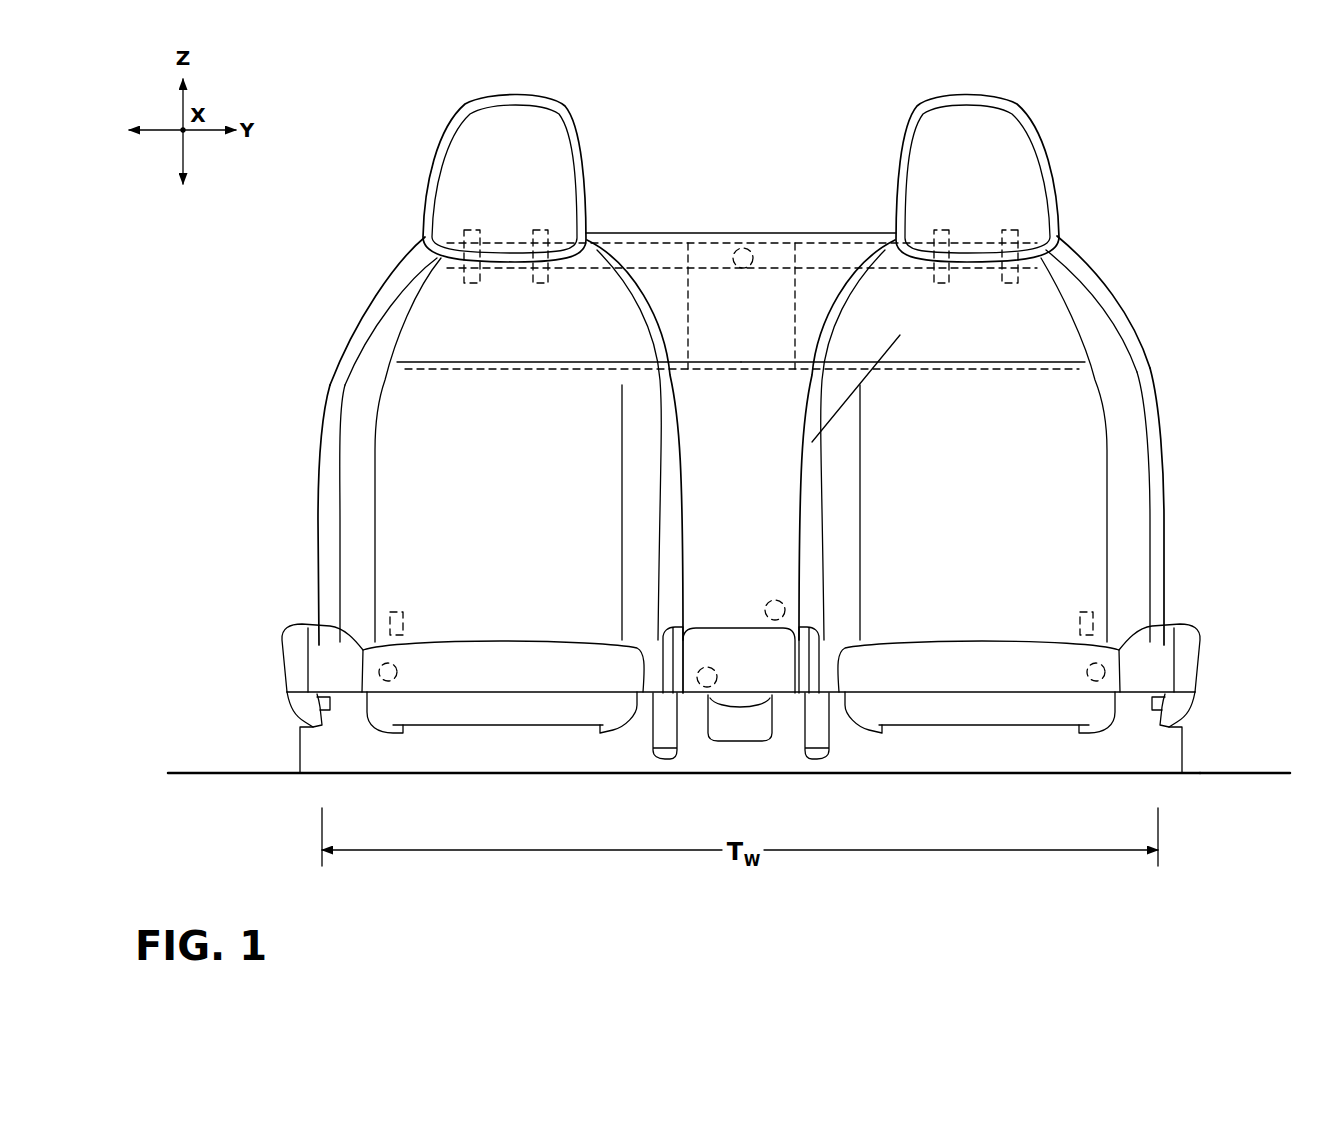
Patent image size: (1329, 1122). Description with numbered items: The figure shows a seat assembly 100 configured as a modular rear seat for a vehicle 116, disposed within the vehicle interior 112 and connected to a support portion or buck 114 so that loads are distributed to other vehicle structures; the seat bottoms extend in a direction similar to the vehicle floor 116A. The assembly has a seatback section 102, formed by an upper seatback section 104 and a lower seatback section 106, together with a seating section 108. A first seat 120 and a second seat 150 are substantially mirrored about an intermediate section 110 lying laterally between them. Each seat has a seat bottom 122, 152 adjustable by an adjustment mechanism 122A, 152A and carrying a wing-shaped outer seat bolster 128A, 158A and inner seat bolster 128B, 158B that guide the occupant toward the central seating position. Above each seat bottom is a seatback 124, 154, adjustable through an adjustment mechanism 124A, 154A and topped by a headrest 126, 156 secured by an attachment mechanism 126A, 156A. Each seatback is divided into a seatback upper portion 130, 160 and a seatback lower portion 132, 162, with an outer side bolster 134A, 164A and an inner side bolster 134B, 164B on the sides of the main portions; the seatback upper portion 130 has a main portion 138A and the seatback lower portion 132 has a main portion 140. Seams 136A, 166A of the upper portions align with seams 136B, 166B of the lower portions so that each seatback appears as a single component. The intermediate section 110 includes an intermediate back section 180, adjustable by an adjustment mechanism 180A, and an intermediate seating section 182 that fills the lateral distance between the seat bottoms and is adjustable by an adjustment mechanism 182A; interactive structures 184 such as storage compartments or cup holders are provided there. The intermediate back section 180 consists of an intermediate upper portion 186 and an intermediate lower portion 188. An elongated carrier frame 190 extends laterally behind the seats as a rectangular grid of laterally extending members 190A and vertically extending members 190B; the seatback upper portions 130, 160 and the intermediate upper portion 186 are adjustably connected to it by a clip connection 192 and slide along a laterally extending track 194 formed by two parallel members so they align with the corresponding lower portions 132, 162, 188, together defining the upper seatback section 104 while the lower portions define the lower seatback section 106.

The seat assembly 100 is at (1090, 112).
The seatback section 102 is at (1095, 257).
The upper seatback section 104 is at (1142, 322).
The lower seatback section 106 is at (1168, 522).
The seating section 108 is at (1212, 632).
The intermediate section 110 is at (642, 220).
The vehicle interior 112 is at (1238, 690).
The support portion or buck 114 is at (1108, 733).
The vehicle 116 is at (1223, 846).
The vehicle floor 116A is at (1218, 776).
The first seat 120 is at (400, 242).
The seat bottom 122 is at (278, 652).
The adjustment mechanism 122A is at (380, 678).
The seatback 124 is at (328, 349).
The adjustment mechanism 124A is at (388, 620).
The headrest 126 is at (472, 98).
The attachment mechanism 126A is at (462, 240).
The outer seat bolster 128A is at (293, 672).
The inner seat bolster 128B is at (658, 670).
The seatback upper portion 130 is at (448, 298).
The seatback lower portion 132 is at (405, 530).
The outer side bolster 134A is at (315, 477).
The inner side bolster 134B is at (640, 410).
The seams 136A is at (457, 327).
The seams 136B is at (410, 370).
The first bolster shoulder portion 138A is at (430, 282).
The main portion 140 is at (390, 582).
The second seat 150 is at (1068, 203).
The seat bottom 152 is at (1207, 690).
The adjustment mechanism 152A is at (1100, 682).
The seatback 154 is at (1168, 433).
The adjustment mechanism 154A is at (1093, 630).
The headrest 156 is at (990, 96).
The attachment mechanism 156A is at (1090, 258).
The outer seat bolster 158A is at (1187, 663).
The inner seat bolster 158B is at (823, 660).
The seatback upper portion 160 is at (1013, 337).
The seatback lower portion 162 is at (1047, 493).
The outer side bolster 164A is at (1112, 265).
The inner side bolster 164B is at (875, 293).
The seams 166A is at (1140, 322).
The seams 166B is at (1085, 378).
The intermediate back section 180 is at (830, 240).
The adjustment mechanism 180A is at (775, 621).
The intermediate seating section 182 is at (775, 672).
The adjustment mechanism 182A is at (703, 688).
The interactive structures 184 is at (740, 723).
The intermediate upper portion 186 is at (862, 228).
The intermediate lower portion 188 is at (700, 577).
The carrier frame 190 is at (688, 295).
The laterally extending members 190A is at (632, 361).
The vertically extending members 190B is at (690, 240).
The clip connection 192 is at (737, 247).
The sliding portion or track 194 is at (778, 258).